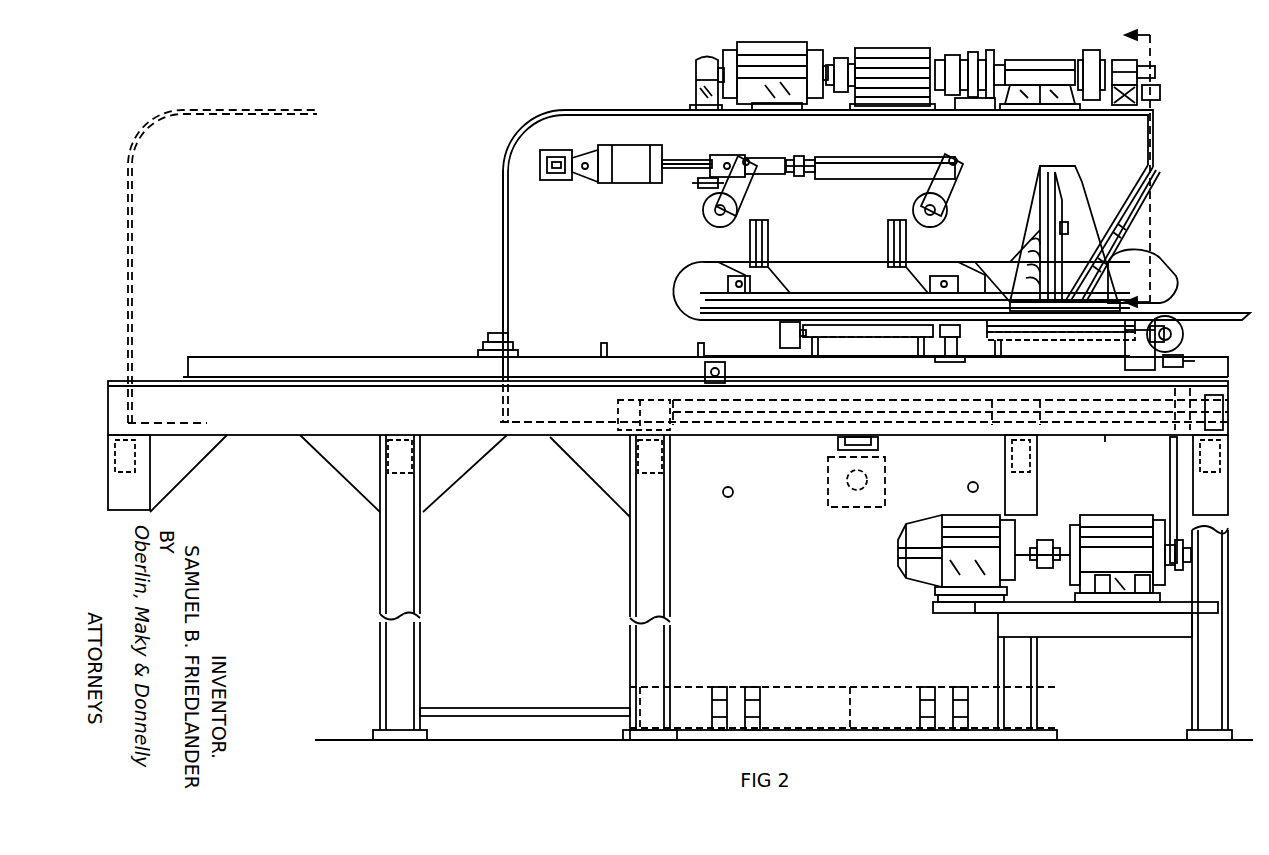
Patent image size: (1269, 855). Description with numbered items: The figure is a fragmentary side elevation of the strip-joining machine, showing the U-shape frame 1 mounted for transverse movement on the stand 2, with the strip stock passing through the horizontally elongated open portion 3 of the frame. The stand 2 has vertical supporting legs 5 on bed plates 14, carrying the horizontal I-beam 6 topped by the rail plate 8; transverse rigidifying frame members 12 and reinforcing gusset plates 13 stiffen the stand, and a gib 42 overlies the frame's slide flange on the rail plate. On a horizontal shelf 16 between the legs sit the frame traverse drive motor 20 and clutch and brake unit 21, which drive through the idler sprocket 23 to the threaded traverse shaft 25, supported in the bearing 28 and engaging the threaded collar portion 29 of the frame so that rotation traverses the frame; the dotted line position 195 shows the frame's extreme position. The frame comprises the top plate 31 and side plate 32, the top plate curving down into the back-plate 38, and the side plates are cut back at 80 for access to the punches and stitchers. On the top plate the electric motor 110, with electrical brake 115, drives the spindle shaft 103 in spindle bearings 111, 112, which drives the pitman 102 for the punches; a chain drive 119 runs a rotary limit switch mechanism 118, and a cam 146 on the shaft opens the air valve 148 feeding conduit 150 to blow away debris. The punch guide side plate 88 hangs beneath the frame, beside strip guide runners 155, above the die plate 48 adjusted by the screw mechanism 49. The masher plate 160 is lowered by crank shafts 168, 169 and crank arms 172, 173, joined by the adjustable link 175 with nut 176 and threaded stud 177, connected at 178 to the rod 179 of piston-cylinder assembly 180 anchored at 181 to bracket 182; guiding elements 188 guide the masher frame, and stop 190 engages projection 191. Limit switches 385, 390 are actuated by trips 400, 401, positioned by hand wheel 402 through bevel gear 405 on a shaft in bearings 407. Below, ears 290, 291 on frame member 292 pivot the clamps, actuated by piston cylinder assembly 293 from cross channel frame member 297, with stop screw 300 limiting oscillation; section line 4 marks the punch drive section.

The U-shape frame 1 is at (556, 112).
The stand 2 is at (1240, 480).
The horizontally elongated open portion 3 is at (686, 289).
The section line 4- 4 is at (1151, 164).
The supporting legs 5 is at (414, 580).
The I-beam 6 is at (278, 432).
The rail plate 8 is at (320, 358).
The transverse rigidifying frame members 12 is at (140, 455).
The reinforcing gusset plates 13 is at (462, 472).
The bed plates 14 is at (440, 716).
The horizontal shelf 16 is at (1104, 622).
The frame traverse drive motor 20 is at (944, 520).
The clutch and brake unit 21 is at (1118, 516).
The idler sprocket 23 is at (1170, 455).
The threaded traverse shaft 25 is at (783, 412).
The bearing 28 is at (632, 404).
The threaded collar portion 29 is at (1108, 445).
The top plate 31 is at (672, 109).
The side plate 32 is at (522, 140).
The back-plate 38 is at (503, 302).
The gib 42 is at (458, 356).
The die plate 48 is at (1150, 314).
The adjusting screw mechanism 49 is at (1190, 360).
The cut back 80 is at (1040, 204).
The side plate of punch guide 88 is at (1122, 238).
The pitman 102 is at (1090, 50).
The spindle shaft 103 is at (1000, 64).
The electric motor 110 is at (745, 42).
The spindle bearing 111 is at (1050, 60).
The spindle bearing 112 is at (1122, 66).
The electrical brake 115 is at (696, 58).
The rotary limit switch mechanism 118 is at (908, 48).
The chain drive 119 is at (946, 56).
The cam 146 is at (1156, 70).
The air valve 148 is at (1160, 93).
The conduit 150 is at (1150, 192).
The strip guide runners 155 is at (1148, 258).
The masher plate 160 is at (820, 296).
The transverse shaft 168 is at (718, 222).
The transverse shaft 169 is at (948, 210).
The crank arm 172 is at (748, 187).
The crank arm 173 is at (952, 186).
The adjustable link 175 is at (876, 178).
The nut 176 is at (800, 156).
The threaded stud 177 is at (804, 174).
The connection 178 is at (728, 156).
The rod 179 is at (682, 170).
The piston-cylinder assembly 180 is at (628, 184).
The connection 181 is at (585, 180).
The bracket 182 is at (550, 180).
The guiding elements 188 is at (768, 235).
The stop 190 is at (700, 190).
The projection 191 is at (762, 158).
The dotted line position 195 is at (130, 225).
The ear 290 is at (748, 684).
The ear 291 is at (940, 684).
The frame member 292 is at (838, 697).
The piston cylinder assembly 293 is at (870, 478).
The cross channel frame member 297 is at (878, 444).
The adjustable stop screw 300 is at (727, 372).
The limit switch 385 is at (508, 340).
The limit switch 390 is at (958, 350).
The trip 400 is at (842, 337).
The trip 401 is at (1090, 340).
The hand wheel 402 is at (1184, 334).
The bevel gear 405 is at (1132, 345).
The bearings 407 is at (780, 333).